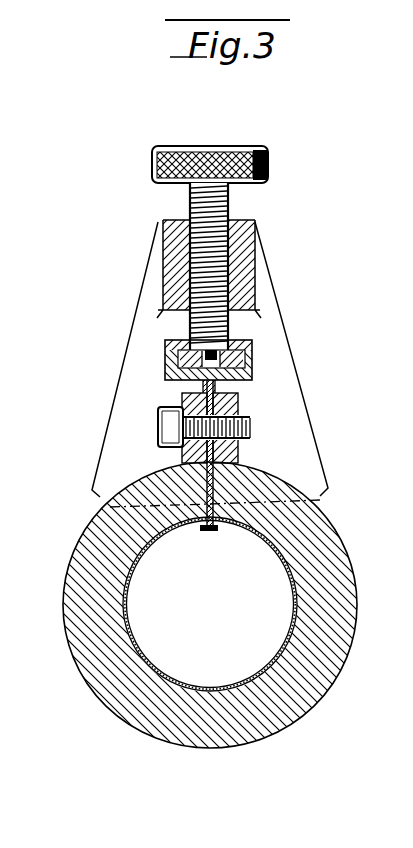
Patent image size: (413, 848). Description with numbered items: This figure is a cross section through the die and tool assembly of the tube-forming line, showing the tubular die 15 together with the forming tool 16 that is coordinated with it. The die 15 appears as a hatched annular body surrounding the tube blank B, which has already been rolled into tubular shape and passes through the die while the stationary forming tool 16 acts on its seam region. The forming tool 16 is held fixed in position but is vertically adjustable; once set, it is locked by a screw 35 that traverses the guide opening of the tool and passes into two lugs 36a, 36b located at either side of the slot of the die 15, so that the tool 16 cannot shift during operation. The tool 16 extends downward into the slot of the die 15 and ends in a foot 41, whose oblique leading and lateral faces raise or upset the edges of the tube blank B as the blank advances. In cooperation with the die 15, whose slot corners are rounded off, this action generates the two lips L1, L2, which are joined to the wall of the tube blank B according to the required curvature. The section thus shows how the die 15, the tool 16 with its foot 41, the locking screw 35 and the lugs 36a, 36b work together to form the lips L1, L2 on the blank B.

The tubular die 15 is at (172, 748).
The forming tool 16 is at (214, 487).
The screw 35 is at (250, 430).
The lug 36a is at (190, 402).
The lug 36b is at (238, 397).
The foot 41 is at (213, 533).
The tube blank B is at (127, 614).
The lip L1 is at (208, 519).
The lip L2 is at (214, 513).